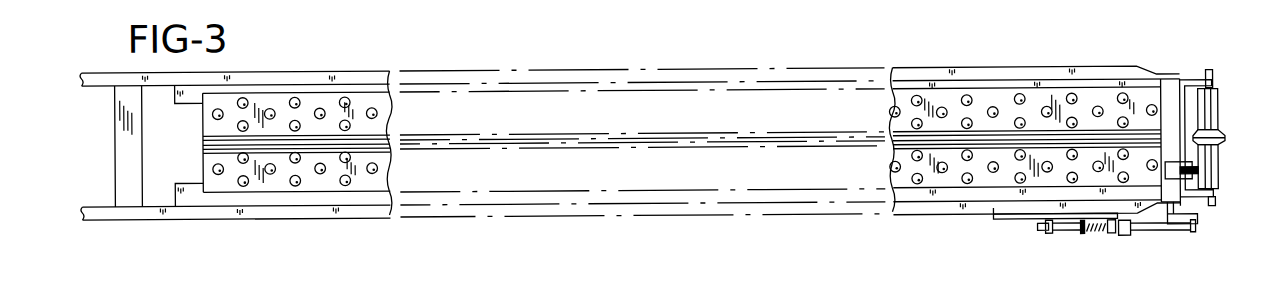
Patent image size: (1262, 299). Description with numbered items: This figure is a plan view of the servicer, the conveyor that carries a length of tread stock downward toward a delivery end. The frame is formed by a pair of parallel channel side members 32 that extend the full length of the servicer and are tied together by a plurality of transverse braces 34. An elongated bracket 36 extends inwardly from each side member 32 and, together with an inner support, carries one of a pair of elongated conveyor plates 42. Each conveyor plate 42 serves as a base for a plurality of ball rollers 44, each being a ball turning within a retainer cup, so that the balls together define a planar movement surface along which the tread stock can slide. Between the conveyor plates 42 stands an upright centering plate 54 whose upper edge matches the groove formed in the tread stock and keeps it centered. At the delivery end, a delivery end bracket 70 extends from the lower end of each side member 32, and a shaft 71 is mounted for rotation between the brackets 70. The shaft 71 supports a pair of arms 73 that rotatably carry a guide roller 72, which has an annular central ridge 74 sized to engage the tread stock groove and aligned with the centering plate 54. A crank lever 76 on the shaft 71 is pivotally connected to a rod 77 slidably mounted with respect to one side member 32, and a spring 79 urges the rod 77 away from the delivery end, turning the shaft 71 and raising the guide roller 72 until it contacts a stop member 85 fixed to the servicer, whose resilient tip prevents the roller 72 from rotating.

The channel side member 32 is at (217, 217).
The transverse brace 34 is at (125, 188).
The elongated bracket 36 is at (197, 104).
The conveyor plate 42 is at (273, 99).
The ball roller 44 is at (295, 101).
The centering plate 54 is at (326, 149).
The delivery end bracket 70 is at (1197, 82).
The shaft 71 is at (1172, 82).
The guide roller 72 is at (1218, 116).
The arm 73 is at (1215, 91).
The annular central ridge 74 is at (1225, 144).
The crank lever 76 is at (1172, 241).
The rod 77 is at (1063, 239).
The spring 79 is at (1093, 239).
The stop member 85 is at (1170, 228).